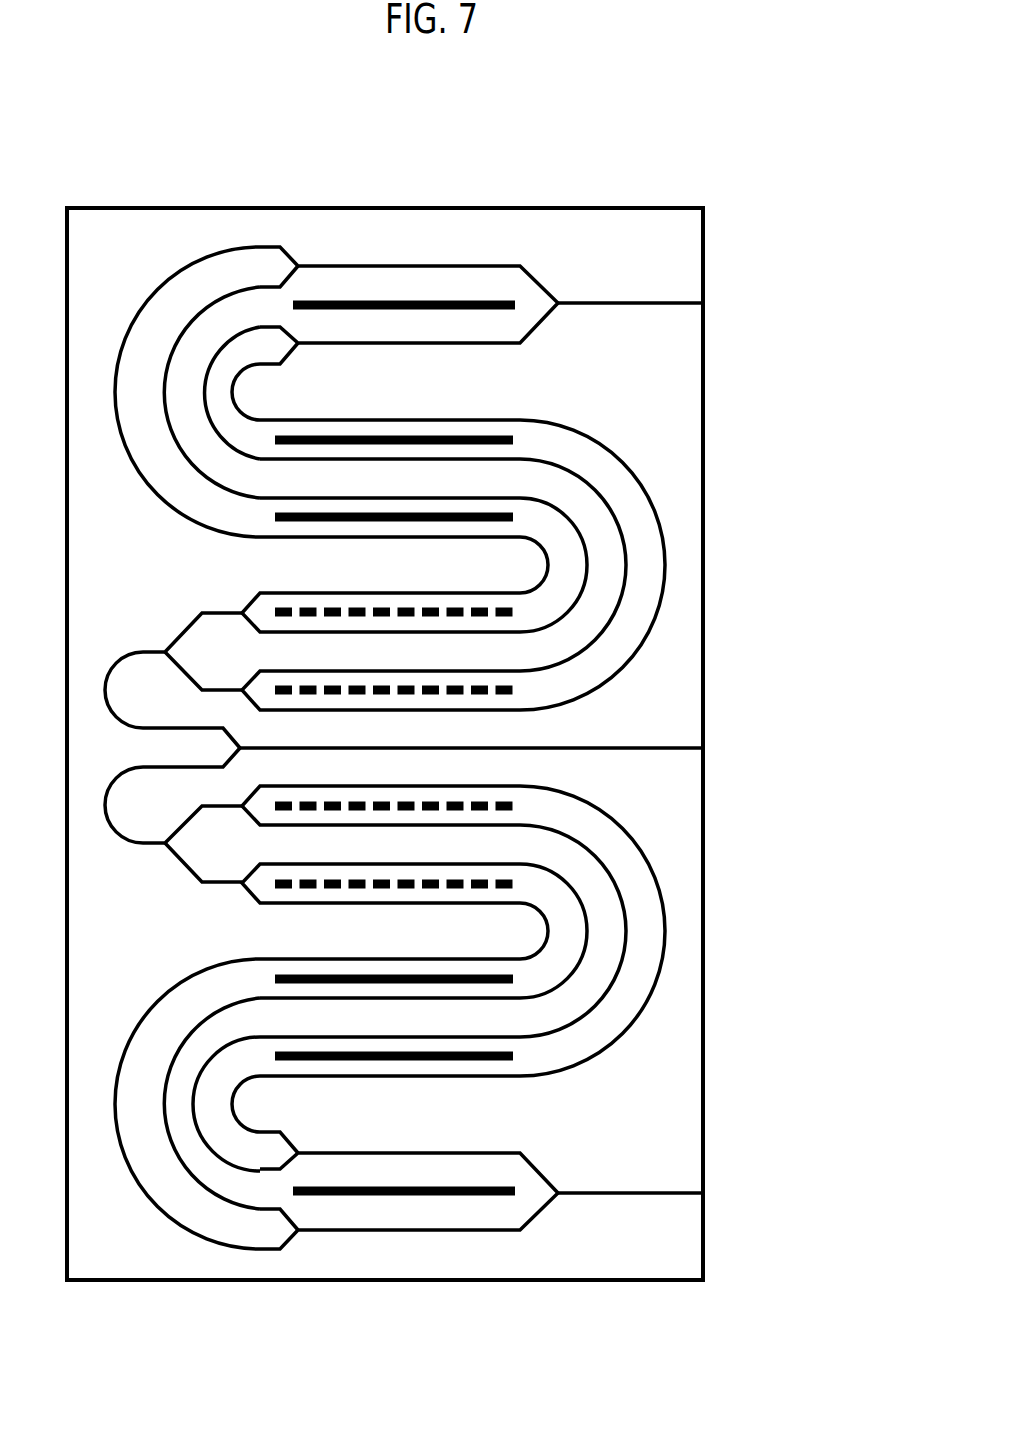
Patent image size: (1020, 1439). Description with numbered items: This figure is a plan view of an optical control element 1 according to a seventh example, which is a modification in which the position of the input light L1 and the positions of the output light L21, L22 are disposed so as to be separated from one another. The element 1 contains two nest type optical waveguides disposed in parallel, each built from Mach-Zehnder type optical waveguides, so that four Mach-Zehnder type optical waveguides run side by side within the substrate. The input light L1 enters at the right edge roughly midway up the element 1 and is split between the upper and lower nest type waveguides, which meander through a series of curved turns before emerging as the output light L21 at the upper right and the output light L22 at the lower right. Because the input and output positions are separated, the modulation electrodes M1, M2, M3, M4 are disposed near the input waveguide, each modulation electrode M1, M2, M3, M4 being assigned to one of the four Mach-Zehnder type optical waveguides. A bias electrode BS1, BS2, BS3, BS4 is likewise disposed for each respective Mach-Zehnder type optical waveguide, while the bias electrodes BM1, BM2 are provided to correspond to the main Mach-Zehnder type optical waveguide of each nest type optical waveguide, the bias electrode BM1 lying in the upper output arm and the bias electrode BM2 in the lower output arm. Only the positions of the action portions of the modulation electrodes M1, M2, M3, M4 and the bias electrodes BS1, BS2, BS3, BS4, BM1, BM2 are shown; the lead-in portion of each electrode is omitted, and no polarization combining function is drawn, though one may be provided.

The light guide plate 1 is at (613, 207).
The bias electrode BM1 is at (383, 300).
The bias electrode BM2 is at (437, 1195).
The bias electrode BS1 is at (487, 437).
The bias electrode BS2 is at (487, 515).
The bias electrode BS3 is at (487, 1059).
The bias electrode BS4 is at (487, 981).
The modulation electrode M1 is at (488, 682).
The modulation electrode M2 is at (488, 605).
The modulation electrode M3 is at (488, 814).
The modulation electrode M4 is at (488, 891).
The input light L1 is at (730, 748).
The output light L21 is at (708, 303).
The output light L22 is at (708, 1192).